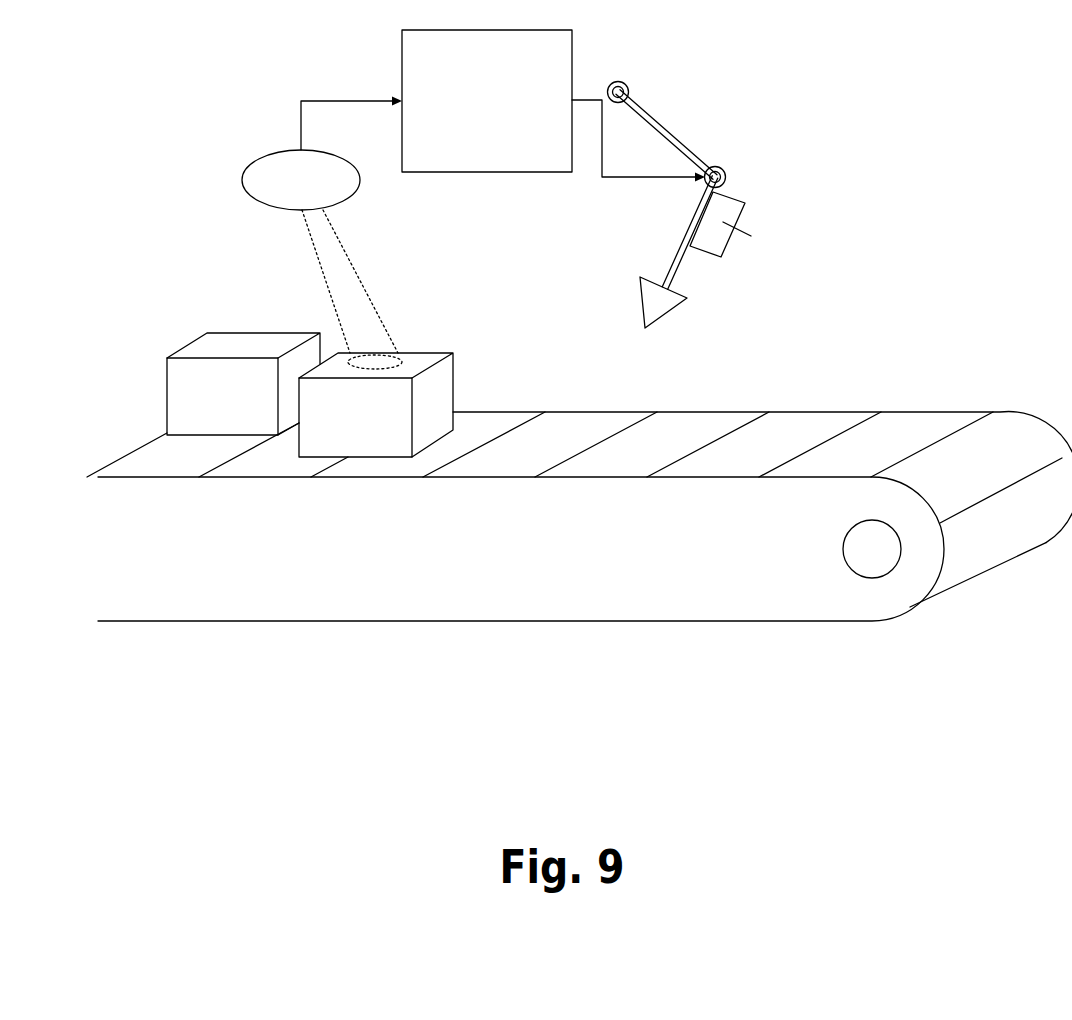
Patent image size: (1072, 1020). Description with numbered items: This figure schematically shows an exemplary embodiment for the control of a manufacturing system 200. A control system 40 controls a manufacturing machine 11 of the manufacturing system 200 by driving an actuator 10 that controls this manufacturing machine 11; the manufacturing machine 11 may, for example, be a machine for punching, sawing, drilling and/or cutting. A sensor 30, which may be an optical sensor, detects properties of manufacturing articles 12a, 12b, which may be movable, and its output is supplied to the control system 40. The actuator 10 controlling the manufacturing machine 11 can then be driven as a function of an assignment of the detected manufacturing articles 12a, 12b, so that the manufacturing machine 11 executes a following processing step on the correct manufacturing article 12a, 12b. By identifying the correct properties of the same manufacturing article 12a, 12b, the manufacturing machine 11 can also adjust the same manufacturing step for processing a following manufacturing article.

The control system 40 is at (388, 38).
The sensor 30 is at (242, 183).
The manufacturing machine 11 is at (687, 148).
The actuator 10 is at (743, 222).
The manufacturing article 12a is at (462, 383).
The manufacturing article 12b is at (187, 343).
The manufacturing system 200 is at (473, 622).